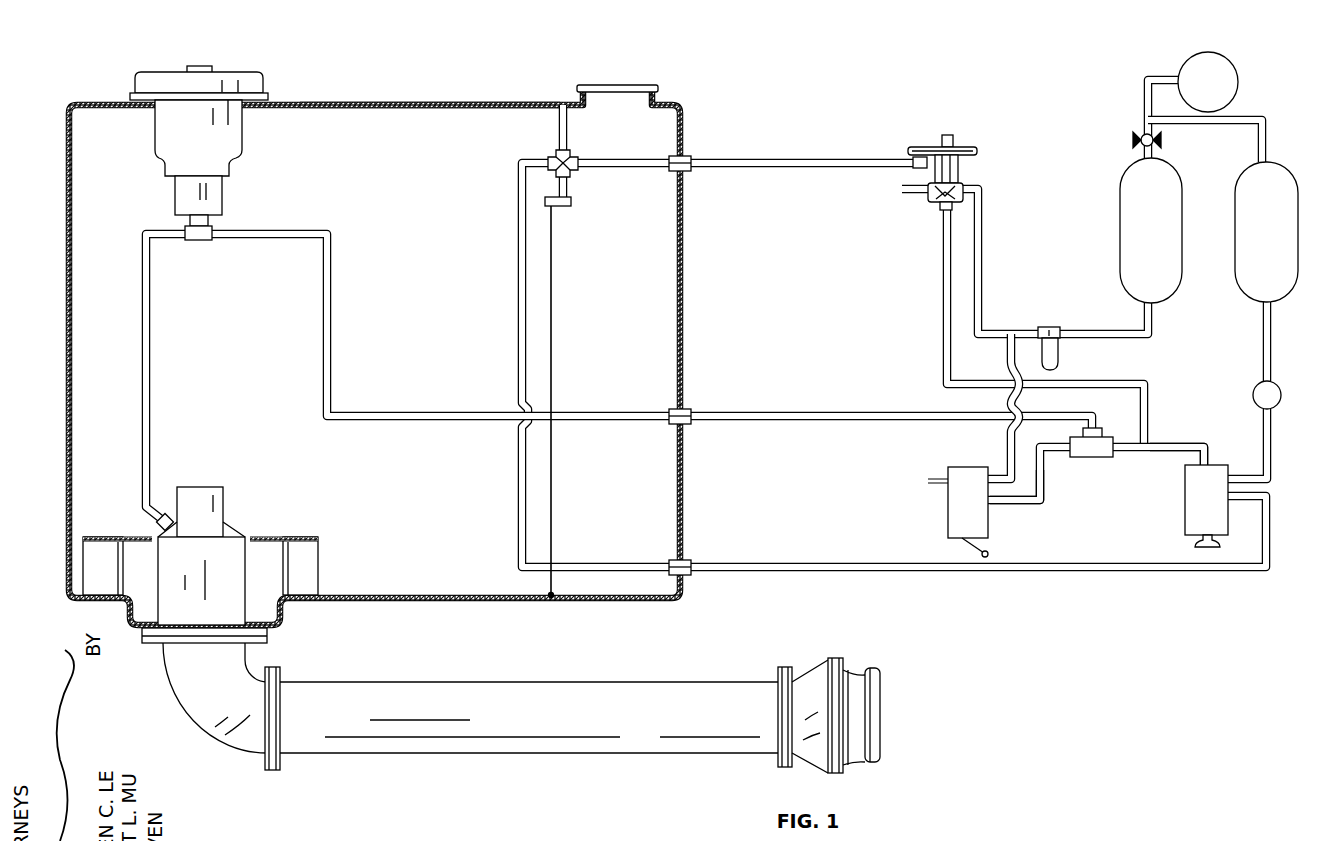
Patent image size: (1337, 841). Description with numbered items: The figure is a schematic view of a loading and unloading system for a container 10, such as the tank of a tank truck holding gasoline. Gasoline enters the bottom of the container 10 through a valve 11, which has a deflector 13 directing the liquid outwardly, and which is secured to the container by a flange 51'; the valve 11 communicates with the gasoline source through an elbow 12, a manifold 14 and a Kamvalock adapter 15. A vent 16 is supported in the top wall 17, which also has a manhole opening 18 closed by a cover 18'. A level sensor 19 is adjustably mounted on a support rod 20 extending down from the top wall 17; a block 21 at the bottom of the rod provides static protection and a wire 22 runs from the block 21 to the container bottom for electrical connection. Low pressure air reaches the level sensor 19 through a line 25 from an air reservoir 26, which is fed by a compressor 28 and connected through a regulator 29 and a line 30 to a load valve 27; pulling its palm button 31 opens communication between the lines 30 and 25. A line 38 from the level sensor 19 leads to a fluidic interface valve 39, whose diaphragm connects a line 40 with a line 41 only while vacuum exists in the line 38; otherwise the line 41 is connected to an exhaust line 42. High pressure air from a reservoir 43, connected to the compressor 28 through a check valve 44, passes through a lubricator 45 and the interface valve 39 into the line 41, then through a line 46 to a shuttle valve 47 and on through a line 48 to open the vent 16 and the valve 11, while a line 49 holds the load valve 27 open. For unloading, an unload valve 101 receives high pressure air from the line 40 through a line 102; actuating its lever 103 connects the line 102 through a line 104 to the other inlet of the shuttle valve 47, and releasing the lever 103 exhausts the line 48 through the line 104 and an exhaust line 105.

The container 10 is at (474, 99).
The valve 11 is at (250, 566).
The elbow 12 is at (228, 750).
The deflector 13 is at (297, 536).
The manifold 14 is at (385, 755).
The Kamvalock adapter 15 is at (846, 665).
The vent 16 is at (246, 126).
The top wall 17 is at (373, 100).
The manhole opening 18 is at (617, 113).
The cover 18' is at (634, 75).
The level sensor 19 is at (575, 172).
The support rod 20 is at (557, 130).
The block 21 is at (566, 207).
The wire 22 is at (553, 490).
The line 25 is at (517, 275).
The air reservoir 26 is at (1250, 305).
The load valve 27 is at (1183, 527).
The compressor 28 is at (1240, 80).
The regulator 29 is at (1283, 395).
The line 30 is at (1262, 455).
The palm button 31 is at (1205, 550).
The line 38 is at (720, 161).
The fluidic interface valve 39 is at (977, 146).
The line 40 is at (983, 262).
The line 41 is at (942, 318).
The exhaust line 42 is at (905, 195).
The reservoir 43 is at (1120, 220).
The check valve 44 is at (1138, 135).
The lubricator 45 is at (1062, 353).
The line 46 is at (1128, 440).
The shuttle valve 47 is at (1090, 458).
The line 48 is at (402, 413).
The line 49 is at (1183, 442).
The flange 51' is at (236, 633).
The unload valve 101 is at (950, 466).
The line 102 is at (1005, 438).
The lever 103 is at (980, 560).
The line 104 is at (1017, 505).
The exhaust line 105 is at (933, 483).